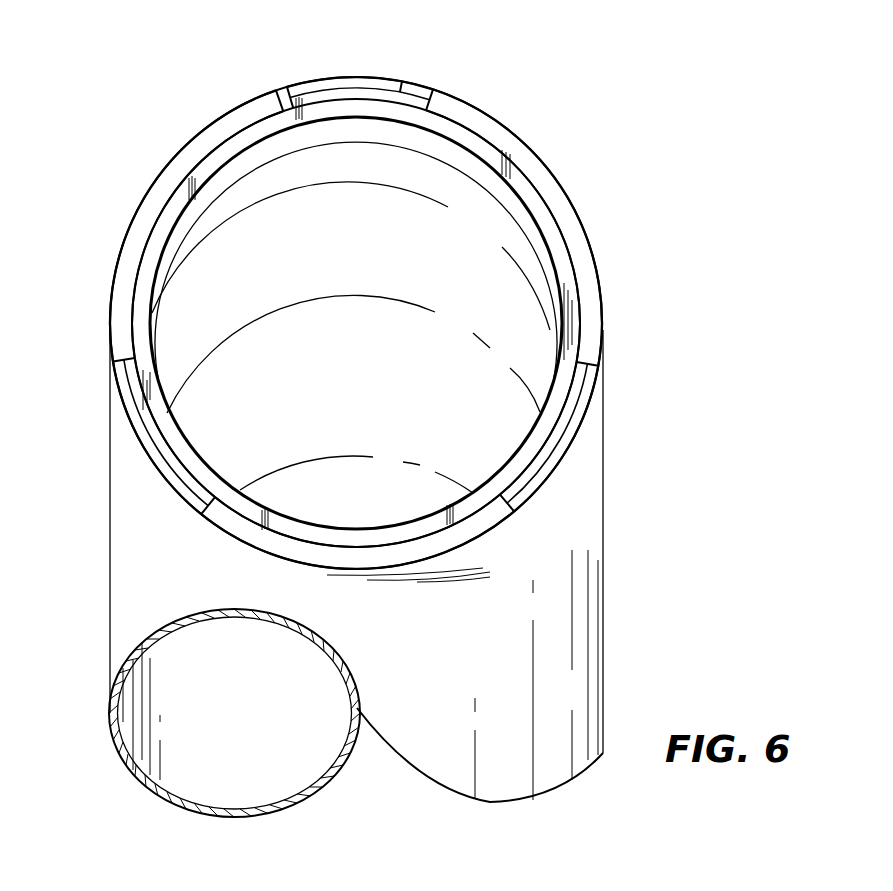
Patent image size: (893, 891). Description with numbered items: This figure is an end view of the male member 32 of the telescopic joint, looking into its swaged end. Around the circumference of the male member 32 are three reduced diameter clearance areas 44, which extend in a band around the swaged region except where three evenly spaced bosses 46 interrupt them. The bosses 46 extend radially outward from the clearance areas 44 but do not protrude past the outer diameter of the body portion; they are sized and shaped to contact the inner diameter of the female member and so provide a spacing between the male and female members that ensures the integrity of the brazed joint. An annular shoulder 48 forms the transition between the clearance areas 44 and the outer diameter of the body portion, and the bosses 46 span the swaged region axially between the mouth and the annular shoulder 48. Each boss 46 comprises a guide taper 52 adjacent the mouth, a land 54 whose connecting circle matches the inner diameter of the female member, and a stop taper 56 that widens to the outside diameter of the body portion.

The male member 32 is at (556, 169).
The clearance areas 44 is at (137, 262).
The bosses 46 is at (365, 78).
The annular shoulder 48 is at (205, 135).
The guide taper 52 is at (290, 96).
The land 54 is at (405, 84).
The stop taper 56 is at (343, 82).